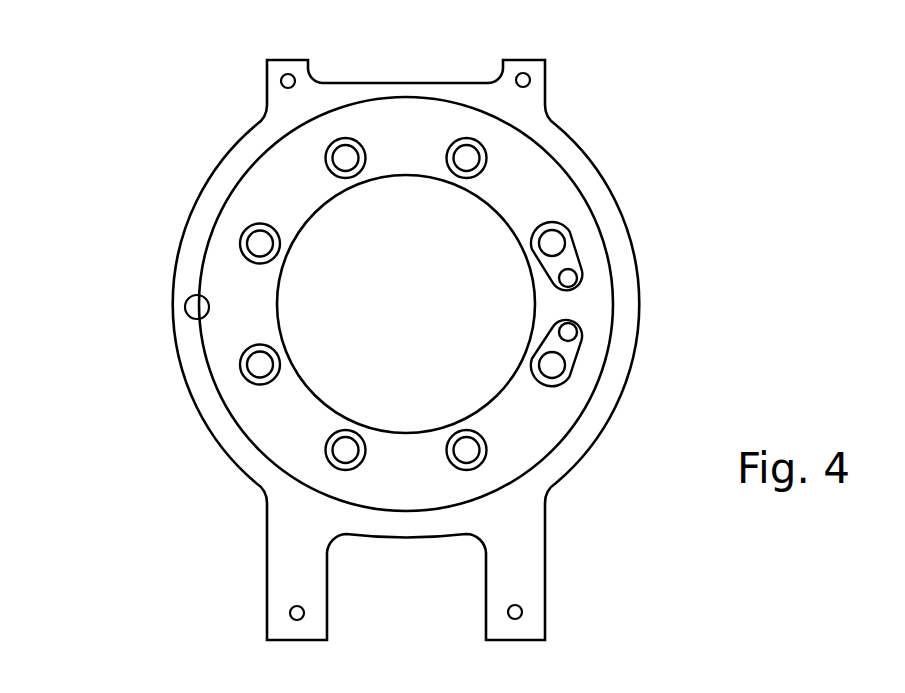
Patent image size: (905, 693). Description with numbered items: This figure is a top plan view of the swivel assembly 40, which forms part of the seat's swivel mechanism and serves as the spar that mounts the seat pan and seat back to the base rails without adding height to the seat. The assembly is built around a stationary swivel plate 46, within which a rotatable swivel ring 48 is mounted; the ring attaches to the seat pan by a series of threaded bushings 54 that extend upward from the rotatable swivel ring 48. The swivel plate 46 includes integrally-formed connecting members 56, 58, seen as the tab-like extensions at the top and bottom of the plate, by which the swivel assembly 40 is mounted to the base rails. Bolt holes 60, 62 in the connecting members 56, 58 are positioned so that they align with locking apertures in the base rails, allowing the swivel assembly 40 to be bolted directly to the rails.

The swivel assembly 40 is at (90, 388).
The swivel plate 46 is at (593, 432).
The swivel ring 48 is at (532, 160).
The threaded bushings 54 is at (323, 158).
The connecting member 56 is at (480, 585).
The connecting member 58 is at (293, 59).
The bolt holes 60 is at (290, 607).
The bolt holes 62 is at (281, 82).